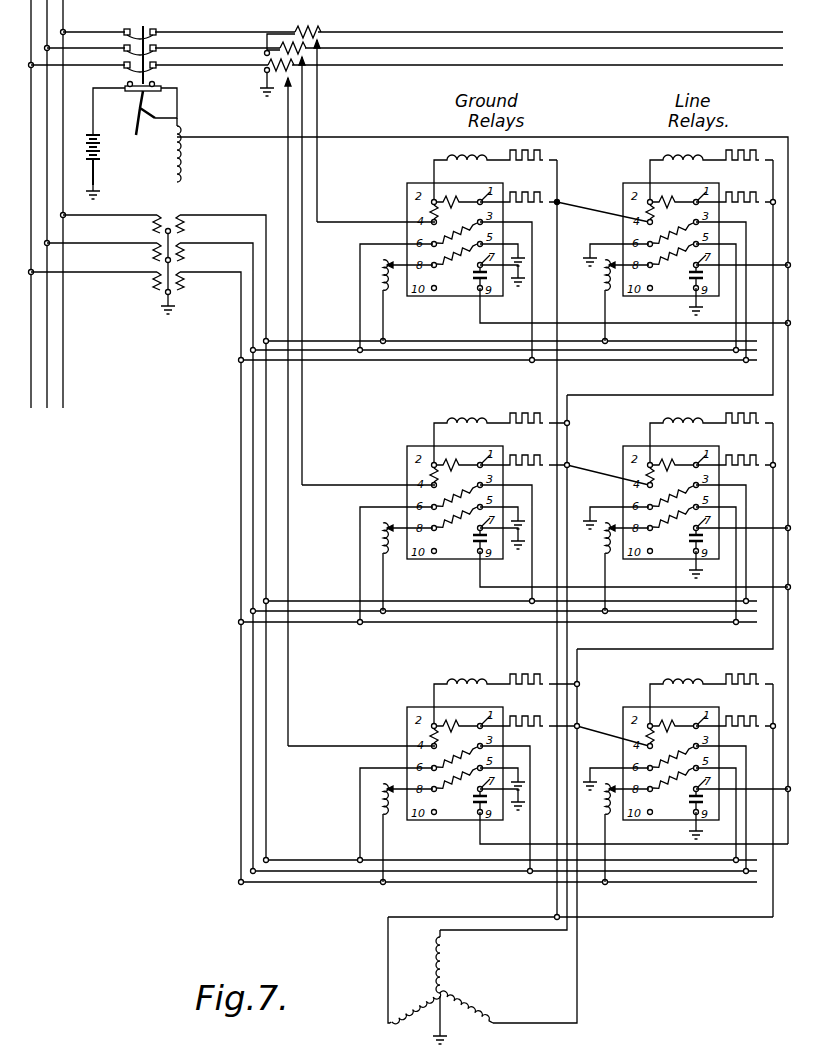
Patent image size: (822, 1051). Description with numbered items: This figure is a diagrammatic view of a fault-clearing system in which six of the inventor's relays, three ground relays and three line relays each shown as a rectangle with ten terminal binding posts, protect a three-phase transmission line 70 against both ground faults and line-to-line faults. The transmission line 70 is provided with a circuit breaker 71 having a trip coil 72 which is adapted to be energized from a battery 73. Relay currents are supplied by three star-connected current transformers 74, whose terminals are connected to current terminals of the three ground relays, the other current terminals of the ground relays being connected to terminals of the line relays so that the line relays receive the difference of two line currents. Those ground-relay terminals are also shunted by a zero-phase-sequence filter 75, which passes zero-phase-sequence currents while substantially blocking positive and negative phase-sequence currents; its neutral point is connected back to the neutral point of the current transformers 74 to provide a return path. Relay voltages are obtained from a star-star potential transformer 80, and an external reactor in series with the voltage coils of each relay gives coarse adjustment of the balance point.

The three-phase transmission line 70 is at (455, 32).
The circuit breaker 71 is at (150, 30).
The trip coil 72 is at (168, 142).
The battery 73 is at (105, 160).
The current transformers 74 is at (320, 31).
The zero-phase-sequence filter 75 is at (445, 996).
The star-star potential transformer 80 is at (160, 288).